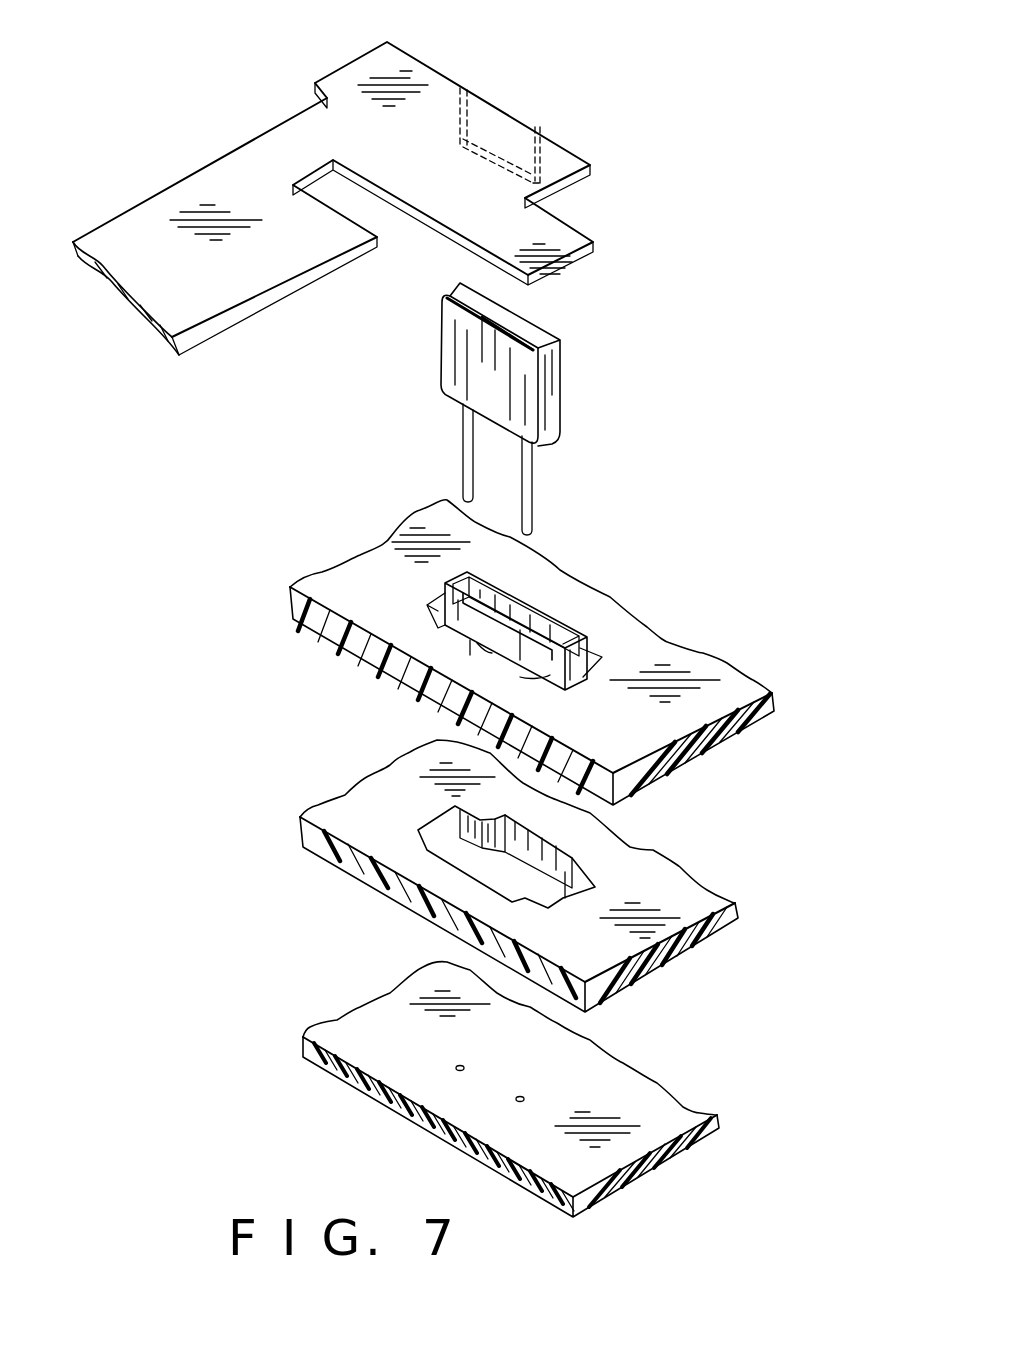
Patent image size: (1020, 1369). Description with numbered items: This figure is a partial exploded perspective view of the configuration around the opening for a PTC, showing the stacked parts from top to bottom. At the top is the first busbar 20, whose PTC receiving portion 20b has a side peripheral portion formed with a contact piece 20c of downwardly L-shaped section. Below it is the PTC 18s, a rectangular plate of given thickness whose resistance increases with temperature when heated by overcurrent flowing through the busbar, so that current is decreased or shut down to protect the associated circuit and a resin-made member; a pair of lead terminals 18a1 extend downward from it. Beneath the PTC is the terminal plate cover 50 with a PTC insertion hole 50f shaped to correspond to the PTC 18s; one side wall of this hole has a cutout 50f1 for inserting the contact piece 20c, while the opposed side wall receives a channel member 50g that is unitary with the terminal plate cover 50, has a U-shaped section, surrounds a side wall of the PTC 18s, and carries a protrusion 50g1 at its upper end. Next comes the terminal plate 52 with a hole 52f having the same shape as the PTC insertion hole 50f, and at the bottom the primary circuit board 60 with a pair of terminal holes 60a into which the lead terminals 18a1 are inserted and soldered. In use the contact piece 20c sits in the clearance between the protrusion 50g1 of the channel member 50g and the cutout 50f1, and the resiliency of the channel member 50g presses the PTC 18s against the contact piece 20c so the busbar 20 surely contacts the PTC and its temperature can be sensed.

The first busbar 20 is at (594, 242).
The PTC receiving portion 20b is at (395, 66).
The contact piece 20c is at (505, 132).
The PTC 18s is at (560, 372).
The lead terminals 18a1 is at (535, 466).
The terminal plate cover 50 is at (677, 725).
The PTC insertion hole 50f is at (433, 600).
The cutout 50f1 is at (473, 652).
The channel member 50g is at (580, 657).
The protrusion 50g1 is at (520, 593).
The terminal plate 52 is at (658, 880).
The hole 52f is at (442, 818).
The primary circuit board 60 is at (618, 1093).
The terminal holes 60a is at (517, 1100).